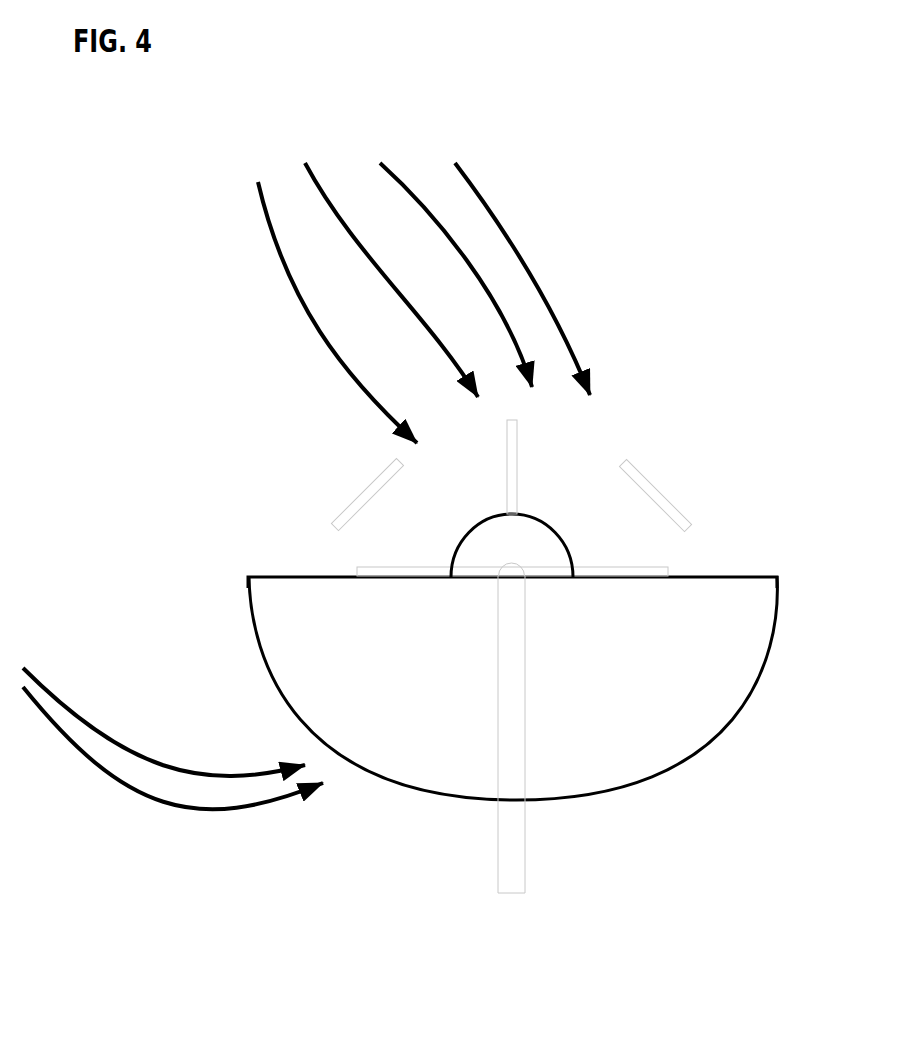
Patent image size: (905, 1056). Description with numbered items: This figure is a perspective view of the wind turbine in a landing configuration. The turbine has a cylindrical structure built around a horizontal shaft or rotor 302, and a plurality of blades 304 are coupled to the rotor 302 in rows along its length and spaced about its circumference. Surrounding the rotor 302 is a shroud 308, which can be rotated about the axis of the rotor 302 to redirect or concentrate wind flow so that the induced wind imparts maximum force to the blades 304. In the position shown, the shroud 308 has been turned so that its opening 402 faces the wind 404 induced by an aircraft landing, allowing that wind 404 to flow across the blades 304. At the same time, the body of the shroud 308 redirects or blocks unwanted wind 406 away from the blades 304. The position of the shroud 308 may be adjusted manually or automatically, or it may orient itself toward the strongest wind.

The rotor 302 is at (550, 565).
The blades 304 is at (433, 503).
The shroud 308 is at (260, 647).
The opening 402 is at (300, 556).
The wind 404 is at (298, 295).
The unwanted wind 406 is at (57, 698).